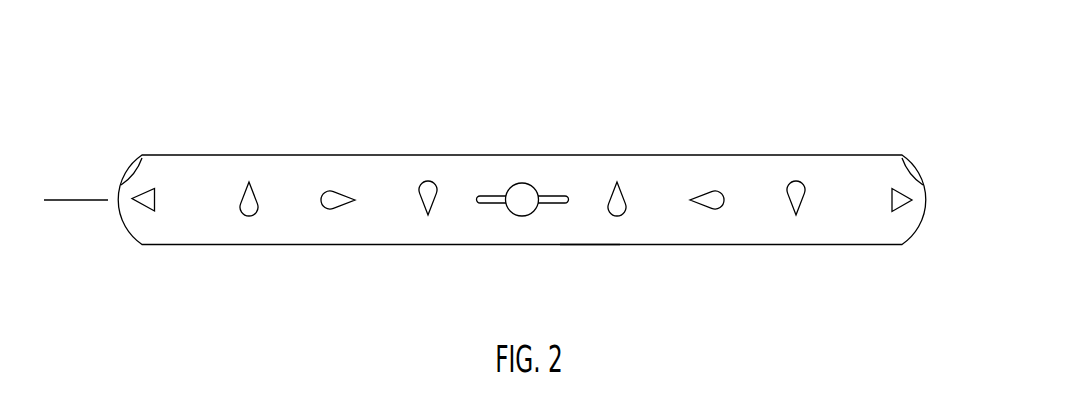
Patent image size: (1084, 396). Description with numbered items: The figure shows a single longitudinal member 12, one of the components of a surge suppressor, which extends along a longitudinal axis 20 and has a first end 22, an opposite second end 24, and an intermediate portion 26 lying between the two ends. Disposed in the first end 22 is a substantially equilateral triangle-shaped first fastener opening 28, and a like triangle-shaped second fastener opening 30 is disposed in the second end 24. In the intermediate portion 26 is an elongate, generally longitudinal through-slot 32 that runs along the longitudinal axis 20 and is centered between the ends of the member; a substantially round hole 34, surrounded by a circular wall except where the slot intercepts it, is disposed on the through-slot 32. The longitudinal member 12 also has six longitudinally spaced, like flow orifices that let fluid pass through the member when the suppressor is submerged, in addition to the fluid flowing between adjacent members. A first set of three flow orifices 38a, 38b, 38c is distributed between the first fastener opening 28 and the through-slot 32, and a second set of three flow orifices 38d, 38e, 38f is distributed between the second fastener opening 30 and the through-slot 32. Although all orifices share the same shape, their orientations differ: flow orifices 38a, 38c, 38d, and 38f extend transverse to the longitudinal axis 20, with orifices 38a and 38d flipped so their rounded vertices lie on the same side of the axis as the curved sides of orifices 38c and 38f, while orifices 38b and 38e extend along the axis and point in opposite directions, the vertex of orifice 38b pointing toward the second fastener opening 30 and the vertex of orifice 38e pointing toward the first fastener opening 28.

The longitudinal member 12 is at (704, 245).
The longitudinal axis 20 is at (79, 199).
The first end 22 is at (166, 173).
The second end 24 is at (876, 180).
The intermediate portion 26 is at (572, 223).
The first fastener opening 28 is at (143, 207).
The second fastener opening 30 is at (908, 205).
The through-slot 32 is at (484, 196).
The hole 34 is at (537, 188).
The flow orifice 38a is at (247, 190).
The flow orifice 38b is at (322, 196).
The flow orifice 38c is at (420, 188).
The flow orifice 38d is at (623, 197).
The flow orifice 38e is at (712, 191).
The flow orifice 38f is at (805, 184).